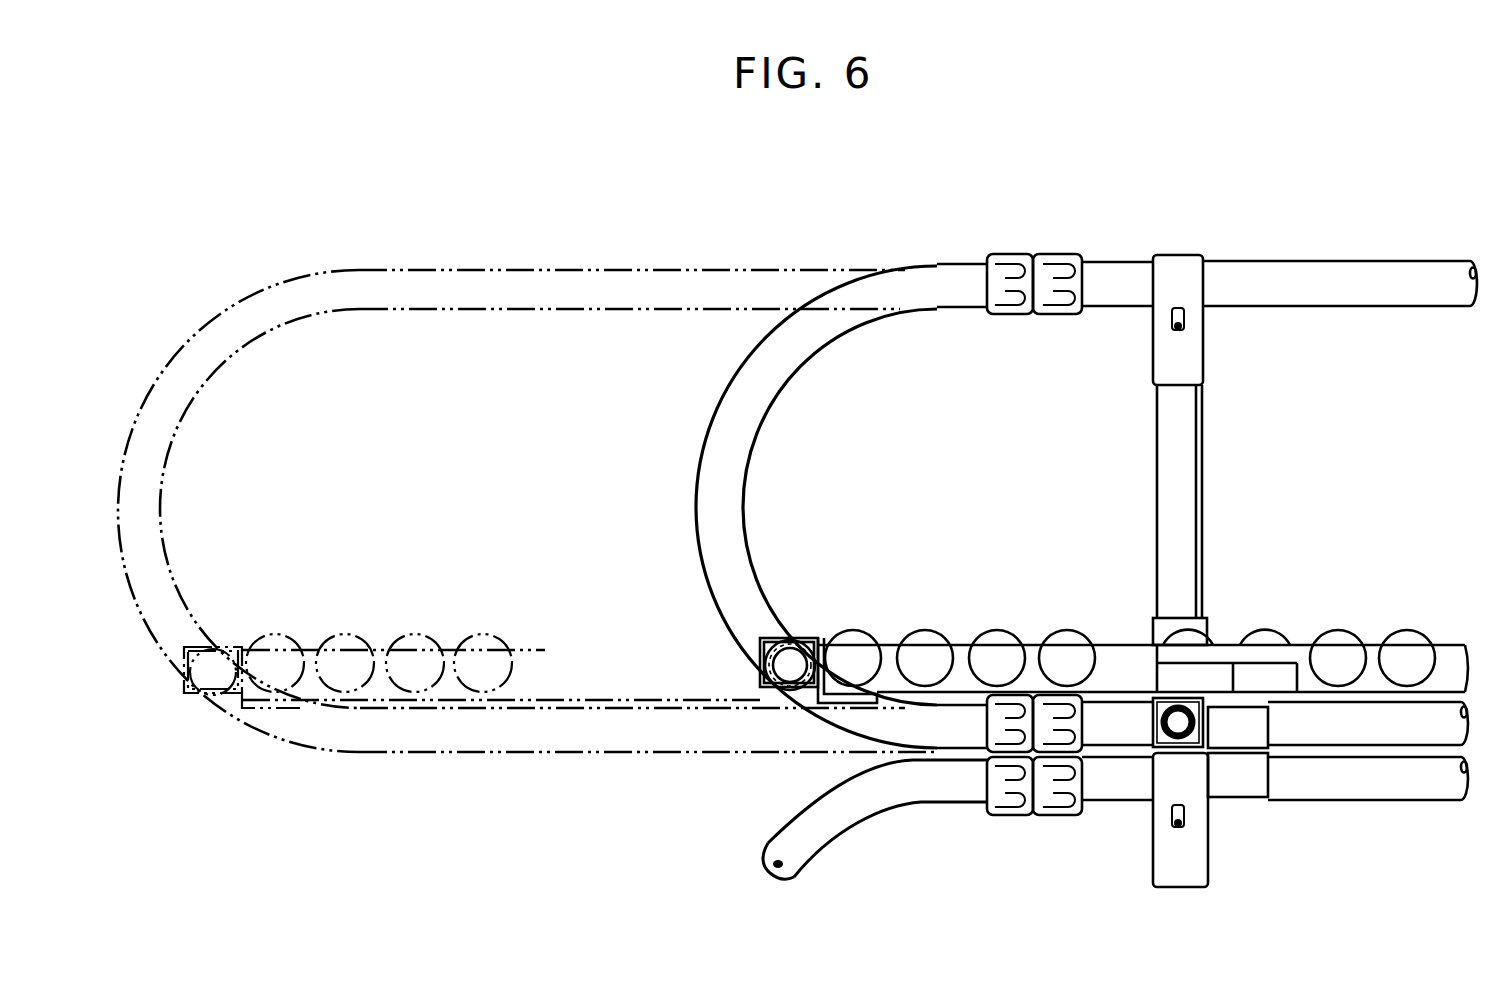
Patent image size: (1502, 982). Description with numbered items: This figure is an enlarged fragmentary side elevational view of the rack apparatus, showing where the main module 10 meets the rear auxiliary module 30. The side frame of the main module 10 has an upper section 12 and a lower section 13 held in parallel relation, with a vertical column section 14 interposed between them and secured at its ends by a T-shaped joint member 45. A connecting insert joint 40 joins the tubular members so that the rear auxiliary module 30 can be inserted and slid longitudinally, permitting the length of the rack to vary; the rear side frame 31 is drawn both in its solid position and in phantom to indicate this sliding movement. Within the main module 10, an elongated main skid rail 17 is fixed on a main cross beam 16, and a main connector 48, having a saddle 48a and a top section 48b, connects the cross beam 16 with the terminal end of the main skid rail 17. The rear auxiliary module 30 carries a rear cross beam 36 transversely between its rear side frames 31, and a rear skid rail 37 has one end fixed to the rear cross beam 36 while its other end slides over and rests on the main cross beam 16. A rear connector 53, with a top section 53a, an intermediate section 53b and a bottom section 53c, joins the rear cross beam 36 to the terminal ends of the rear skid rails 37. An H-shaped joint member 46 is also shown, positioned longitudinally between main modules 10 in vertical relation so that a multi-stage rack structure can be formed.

The main module 10 is at (1279, 218).
The upper section 12 is at (1348, 277).
The lower section 13 is at (1418, 729).
The vertical column section 14 is at (1168, 457).
The main cross beam 16 is at (1197, 798).
The main skid rail 17 is at (1312, 641).
The rear auxiliary module 30 is at (556, 262).
The rear side frame 31 is at (292, 460).
The rear cross beam 36 is at (228, 703).
The rear skid rail 37 is at (520, 640).
The connecting insert joint 40 is at (1030, 246).
The T-shaped joint member 45 is at (1204, 340).
The H-shaped joint member 46 is at (1245, 786).
The main connector 48 is at (1218, 720).
The saddle section 48a is at (1163, 800).
The top section 48b is at (1143, 690).
The rear connector 53 is at (745, 620).
The top section 53a is at (758, 648).
The intermediate section 53b is at (808, 689).
The bottom section 53c is at (837, 708).